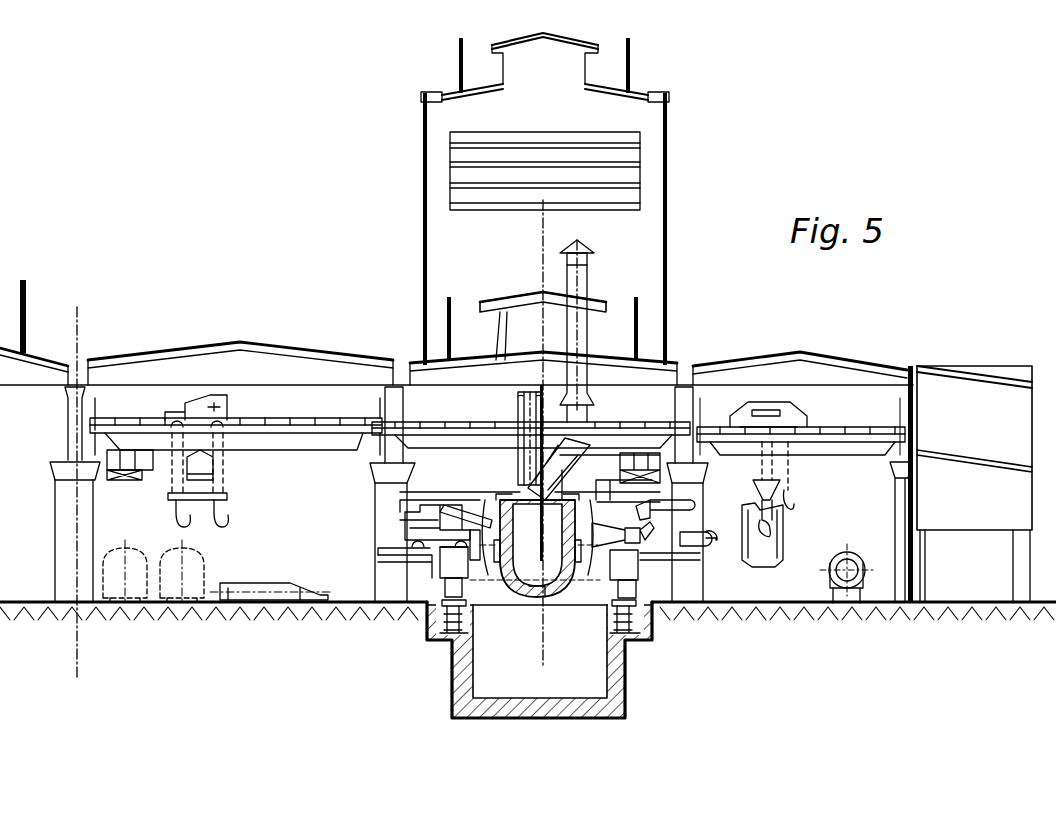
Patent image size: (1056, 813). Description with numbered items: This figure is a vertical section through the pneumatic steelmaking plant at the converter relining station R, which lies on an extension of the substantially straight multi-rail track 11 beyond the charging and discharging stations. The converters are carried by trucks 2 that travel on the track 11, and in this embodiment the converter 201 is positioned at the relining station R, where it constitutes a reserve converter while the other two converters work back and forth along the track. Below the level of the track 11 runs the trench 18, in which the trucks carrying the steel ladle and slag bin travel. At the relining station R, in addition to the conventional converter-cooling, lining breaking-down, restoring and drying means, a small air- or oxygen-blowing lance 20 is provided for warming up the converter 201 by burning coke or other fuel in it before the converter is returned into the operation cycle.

The truck 2 is at (452, 560).
The multi-rail track 11 is at (431, 628).
The trench 18 is at (586, 674).
The air- or oxygen-blowing lance 20 is at (535, 517).
The converter 201 is at (556, 592).
The converter relining station R is at (517, 636).